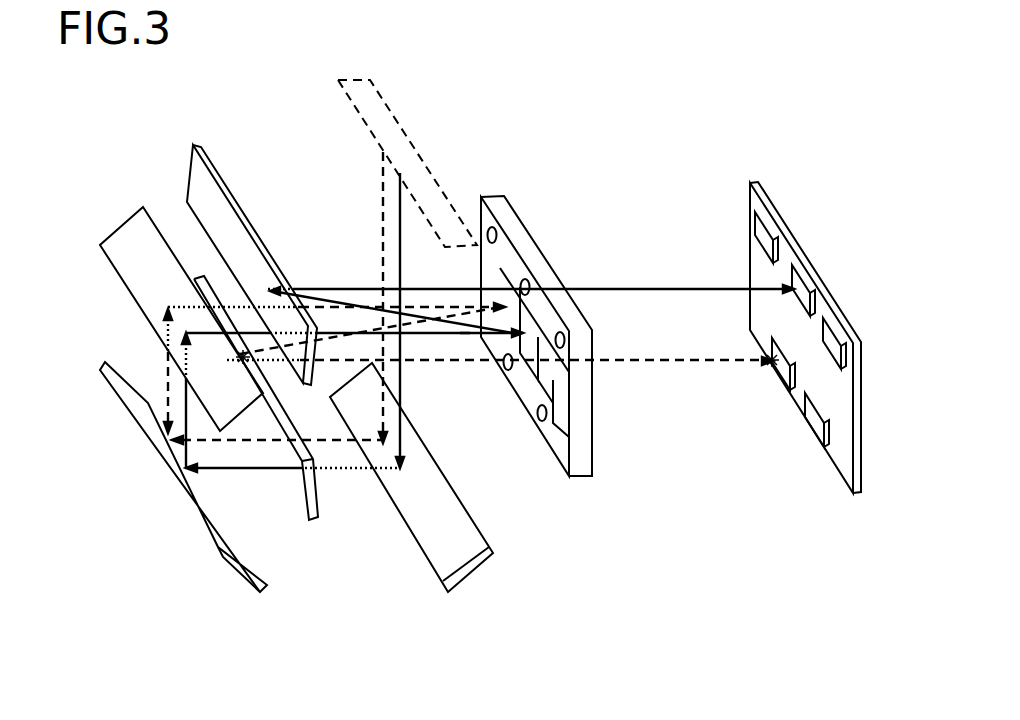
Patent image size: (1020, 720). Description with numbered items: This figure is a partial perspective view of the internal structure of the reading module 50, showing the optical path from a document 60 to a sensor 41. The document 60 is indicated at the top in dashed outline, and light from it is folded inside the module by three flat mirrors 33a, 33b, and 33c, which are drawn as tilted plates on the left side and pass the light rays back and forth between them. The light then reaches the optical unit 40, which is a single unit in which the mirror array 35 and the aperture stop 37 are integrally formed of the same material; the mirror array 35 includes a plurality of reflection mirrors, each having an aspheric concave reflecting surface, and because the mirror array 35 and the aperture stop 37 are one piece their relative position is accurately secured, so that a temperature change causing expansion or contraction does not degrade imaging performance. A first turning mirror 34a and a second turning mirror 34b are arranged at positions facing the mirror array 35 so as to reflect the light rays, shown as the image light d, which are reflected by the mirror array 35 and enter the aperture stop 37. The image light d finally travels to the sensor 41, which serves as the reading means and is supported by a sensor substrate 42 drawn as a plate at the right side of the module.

The flat mirror 33a is at (473, 567).
The flat mirror 33b is at (198, 513).
The flat mirror 33c is at (143, 273).
The first turning mirror 34a is at (203, 187).
The second turning mirror 34b is at (300, 490).
The mirror array 35 is at (565, 402).
The aperture stop 37 is at (537, 418).
The optical unit 40 is at (539, 394).
The sensor 41 is at (836, 442).
The sensor substrate 42 is at (768, 197).
The reading module 50 is at (807, 292).
The document 60 is at (407, 138).
The image light d is at (398, 227).